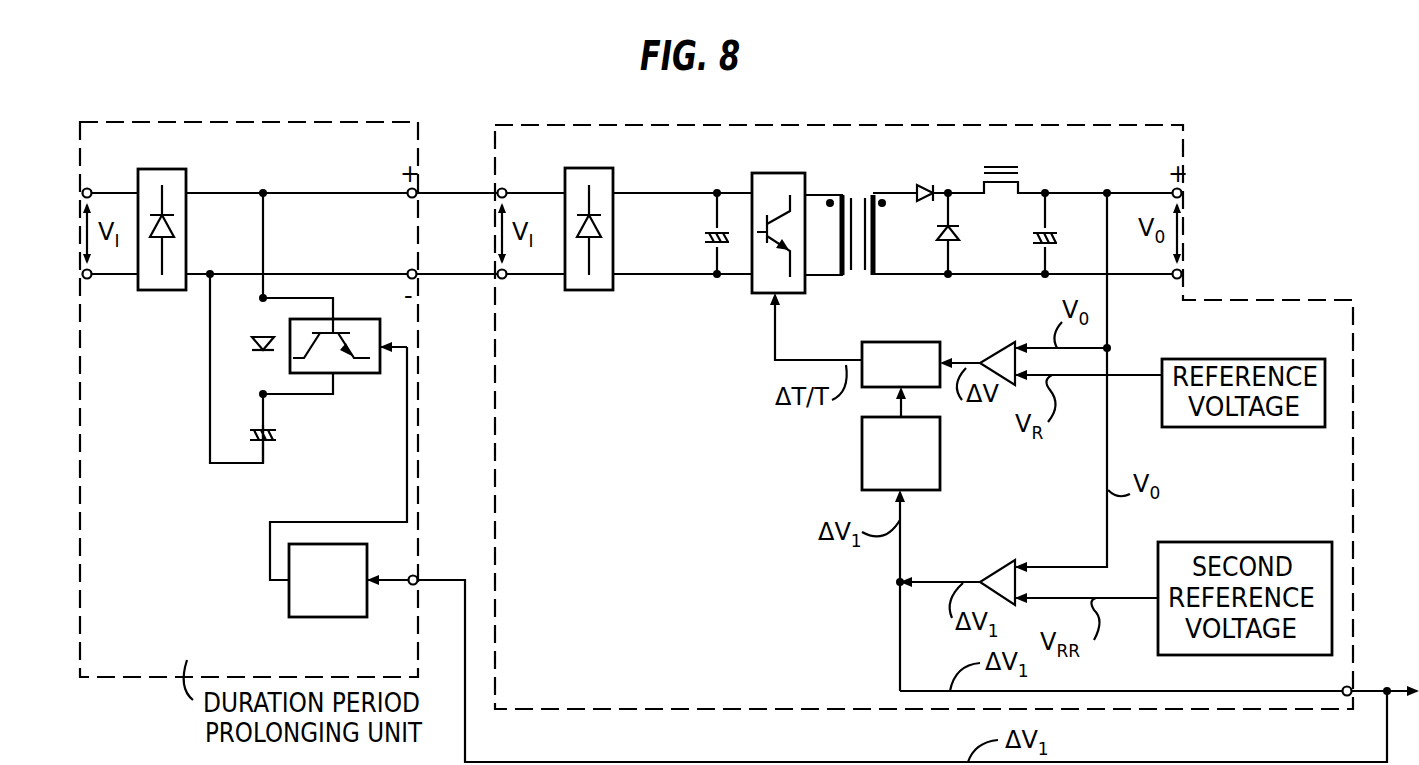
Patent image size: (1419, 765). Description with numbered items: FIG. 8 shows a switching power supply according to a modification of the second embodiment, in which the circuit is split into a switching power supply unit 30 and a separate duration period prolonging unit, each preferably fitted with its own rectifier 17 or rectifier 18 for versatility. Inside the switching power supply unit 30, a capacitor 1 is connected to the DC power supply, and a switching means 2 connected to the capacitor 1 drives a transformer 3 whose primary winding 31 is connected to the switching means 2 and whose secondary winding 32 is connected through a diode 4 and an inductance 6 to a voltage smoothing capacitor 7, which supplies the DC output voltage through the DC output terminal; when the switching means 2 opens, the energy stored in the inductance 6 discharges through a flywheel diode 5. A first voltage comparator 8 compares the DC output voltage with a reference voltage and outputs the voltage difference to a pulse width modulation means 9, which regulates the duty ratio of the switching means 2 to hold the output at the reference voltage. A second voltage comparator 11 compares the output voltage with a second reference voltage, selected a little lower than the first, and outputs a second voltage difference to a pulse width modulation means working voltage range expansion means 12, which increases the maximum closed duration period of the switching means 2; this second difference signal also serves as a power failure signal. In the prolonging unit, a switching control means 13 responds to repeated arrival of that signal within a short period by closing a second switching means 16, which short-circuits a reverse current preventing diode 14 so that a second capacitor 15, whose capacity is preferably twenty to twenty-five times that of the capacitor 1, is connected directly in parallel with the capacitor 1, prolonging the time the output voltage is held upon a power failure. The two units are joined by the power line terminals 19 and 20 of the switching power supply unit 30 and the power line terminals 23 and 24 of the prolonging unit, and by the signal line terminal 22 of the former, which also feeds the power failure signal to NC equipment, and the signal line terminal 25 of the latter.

The capacitor 1 is at (712, 233).
The switching means 2 is at (783, 173).
The transformer 3 is at (991, 227).
The diode 4 is at (925, 185).
The flywheel diode 5 is at (957, 235).
The inductance 6 is at (1010, 167).
The voltage smoothing capacitor 7 is at (1055, 236).
The first voltage comparator 8 is at (1000, 342).
The pulse width modulation means 9 is at (888, 342).
The second voltage comparator 11 is at (1005, 560).
The pulse width modulation means working voltage range expansion means 12 is at (862, 489).
The switching control means 13 is at (336, 620).
The reverse current preventing diode 14 is at (254, 346).
The second capacitor 15 is at (278, 436).
The second switching means 16 is at (368, 375).
The rectifier 17 is at (573, 168).
The rectifier 18 is at (150, 169).
The power line terminal 19 is at (515, 178).
The power line terminal 20 is at (515, 290).
The signal line terminal 22 is at (1159, 672).
The power line terminal 23 is at (400, 209).
The power line terminal 24 is at (400, 257).
The signal line terminal 25 is at (404, 596).
The switching power supply unit 30 is at (1342, 320).
The primary winding 31 is at (843, 283).
The secondary winding 32 is at (872, 280).